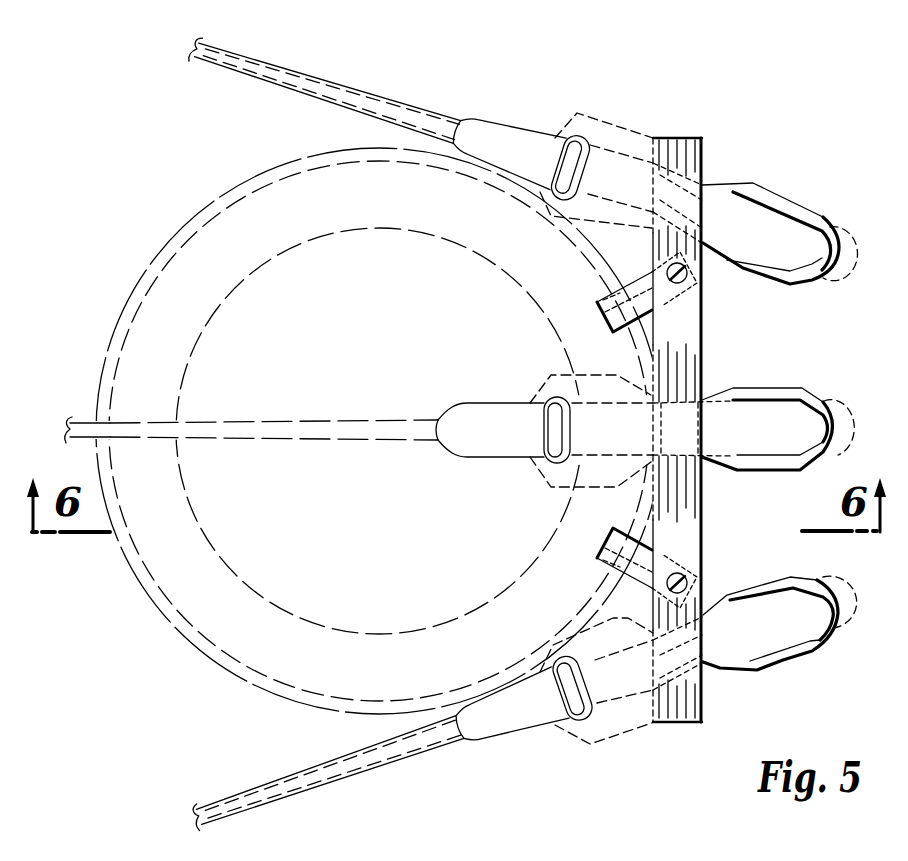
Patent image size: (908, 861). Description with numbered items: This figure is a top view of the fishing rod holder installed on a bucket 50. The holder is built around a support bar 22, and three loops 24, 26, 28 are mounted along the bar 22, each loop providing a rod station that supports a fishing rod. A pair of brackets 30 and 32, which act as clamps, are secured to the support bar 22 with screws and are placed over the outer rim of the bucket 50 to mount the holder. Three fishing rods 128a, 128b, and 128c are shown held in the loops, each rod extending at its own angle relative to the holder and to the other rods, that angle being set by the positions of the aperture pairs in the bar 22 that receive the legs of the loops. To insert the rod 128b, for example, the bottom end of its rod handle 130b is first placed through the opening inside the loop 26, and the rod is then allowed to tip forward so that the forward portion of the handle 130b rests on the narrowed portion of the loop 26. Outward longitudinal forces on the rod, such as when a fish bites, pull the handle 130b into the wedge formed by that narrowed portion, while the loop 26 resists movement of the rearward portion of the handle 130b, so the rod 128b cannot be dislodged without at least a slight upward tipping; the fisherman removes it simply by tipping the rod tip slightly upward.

The support bar 22 is at (683, 319).
The loop 24 is at (797, 197).
The loop 26 is at (793, 465).
The loop 28 is at (806, 658).
The bracket 30 is at (607, 290).
The bracket 32 is at (623, 557).
The bucket 50 is at (212, 202).
The fishing rod 128a is at (381, 103).
The fishing rod 128b is at (327, 418).
The fishing rod 128c is at (300, 775).
The rod handle 130b is at (853, 430).